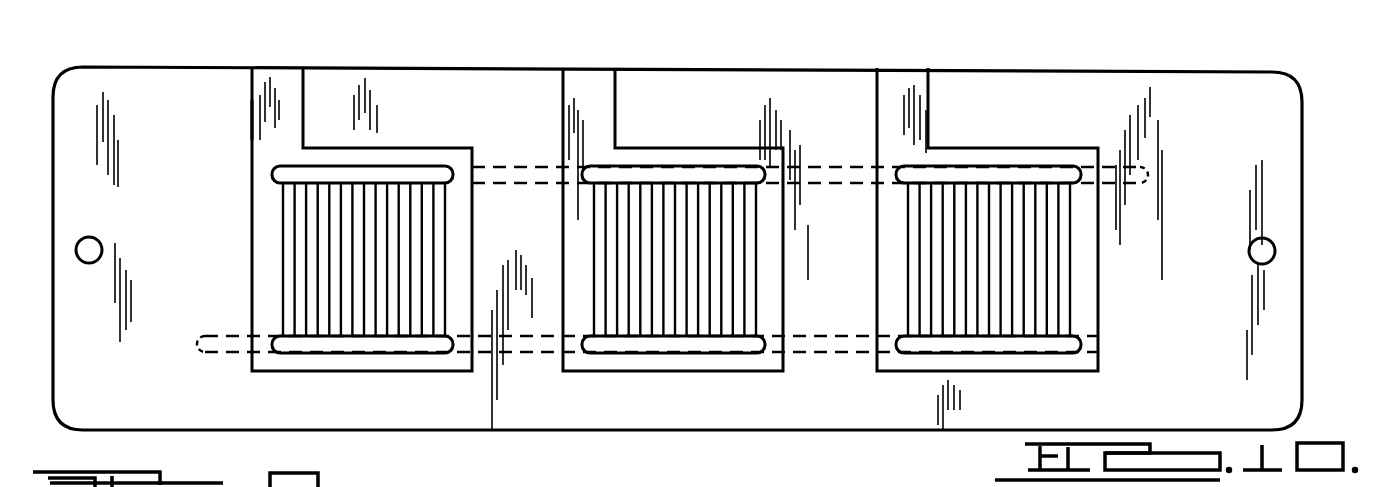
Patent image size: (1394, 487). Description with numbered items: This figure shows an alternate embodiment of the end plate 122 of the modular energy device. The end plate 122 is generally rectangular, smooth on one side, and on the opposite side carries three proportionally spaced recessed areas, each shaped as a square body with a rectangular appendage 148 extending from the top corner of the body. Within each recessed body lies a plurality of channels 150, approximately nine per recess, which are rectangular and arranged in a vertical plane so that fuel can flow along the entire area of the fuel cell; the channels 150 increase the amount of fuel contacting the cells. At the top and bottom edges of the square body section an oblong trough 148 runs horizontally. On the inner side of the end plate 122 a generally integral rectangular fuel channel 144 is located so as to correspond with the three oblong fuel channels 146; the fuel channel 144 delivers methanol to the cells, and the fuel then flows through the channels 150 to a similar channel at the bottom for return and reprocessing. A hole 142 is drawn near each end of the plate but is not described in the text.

The end plate 122 is at (1103, 68).
The mounting hole 142 is at (1275, 252).
The fuel channel 144 is at (510, 166).
The oblong fuel channel 146 is at (258, 213).
The rectangular appendage 148 is at (267, 121).
The channels 150 is at (616, 212).